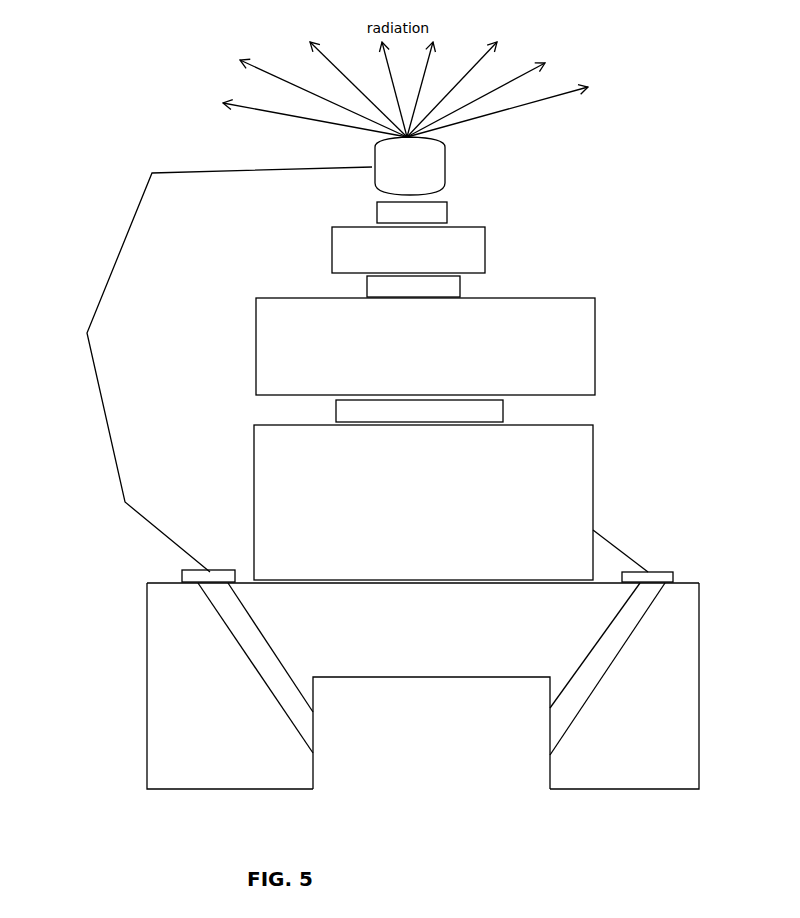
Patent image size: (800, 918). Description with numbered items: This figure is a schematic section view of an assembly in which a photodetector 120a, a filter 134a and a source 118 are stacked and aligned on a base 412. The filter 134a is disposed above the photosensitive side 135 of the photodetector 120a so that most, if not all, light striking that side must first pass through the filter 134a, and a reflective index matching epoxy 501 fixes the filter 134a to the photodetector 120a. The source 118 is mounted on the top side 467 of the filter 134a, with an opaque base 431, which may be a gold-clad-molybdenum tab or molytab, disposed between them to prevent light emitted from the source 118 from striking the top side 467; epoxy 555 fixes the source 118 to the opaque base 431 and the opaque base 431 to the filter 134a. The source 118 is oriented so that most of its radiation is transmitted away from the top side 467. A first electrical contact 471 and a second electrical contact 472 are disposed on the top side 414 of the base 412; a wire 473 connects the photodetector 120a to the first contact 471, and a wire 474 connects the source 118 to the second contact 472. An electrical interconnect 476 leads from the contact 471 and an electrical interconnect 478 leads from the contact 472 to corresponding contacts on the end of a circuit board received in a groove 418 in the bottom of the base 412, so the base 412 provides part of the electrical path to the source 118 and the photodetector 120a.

The source 118 is at (449, 161).
The epoxy 555 is at (307, 238).
The opaque base 431 is at (446, 243).
The top side of filter 467 is at (430, 331).
The filter 134a is at (395, 346).
The reflective index matching epoxy 501 is at (316, 407).
The photosensitive side of photodetector 135 is at (483, 488).
The photodetector 120a is at (483, 502).
The wire 474 is at (205, 369).
The wire 473 is at (628, 540).
The second electrical contact 472 is at (175, 564).
The first electrical contact 471 is at (680, 549).
The top side of base 414 is at (454, 570).
The base 412 is at (459, 709).
The groove 418 is at (431, 769).
The electrical interconnect 478 is at (242, 668).
The electrical interconnect 476 is at (586, 669).